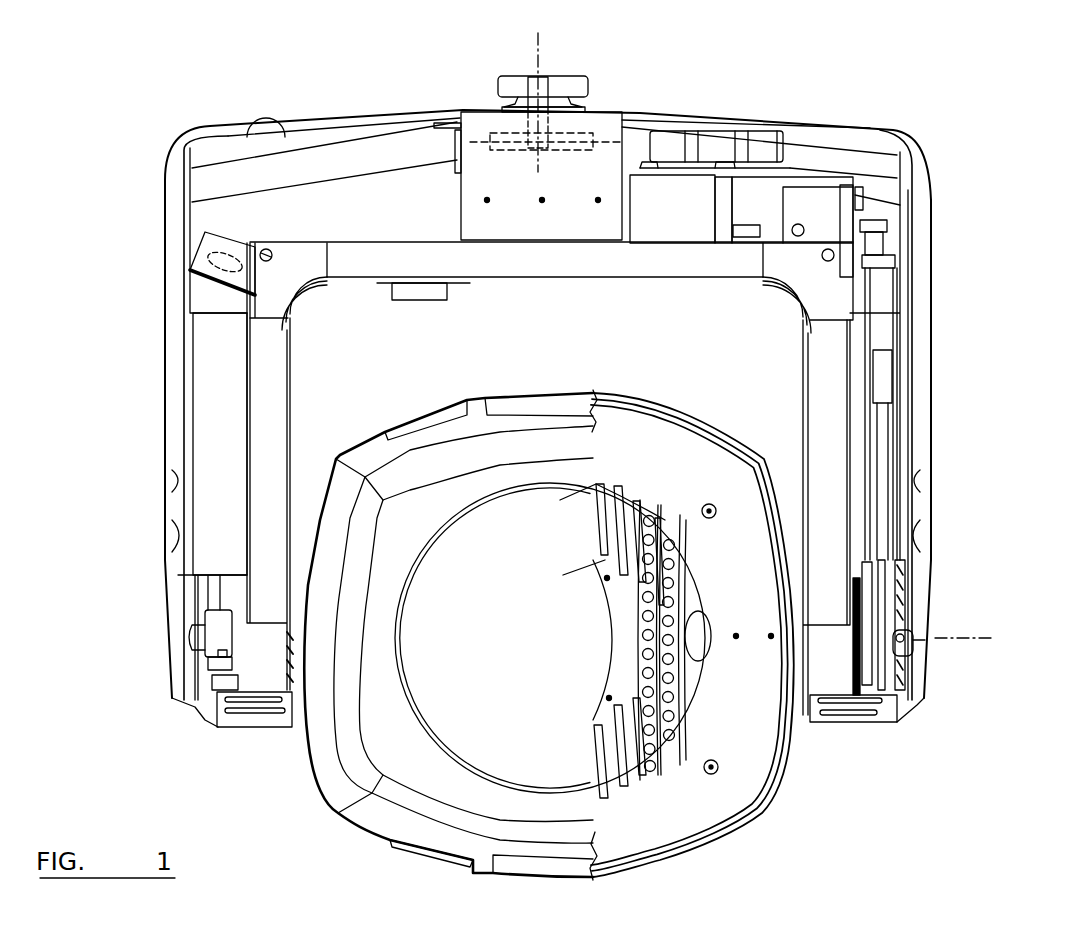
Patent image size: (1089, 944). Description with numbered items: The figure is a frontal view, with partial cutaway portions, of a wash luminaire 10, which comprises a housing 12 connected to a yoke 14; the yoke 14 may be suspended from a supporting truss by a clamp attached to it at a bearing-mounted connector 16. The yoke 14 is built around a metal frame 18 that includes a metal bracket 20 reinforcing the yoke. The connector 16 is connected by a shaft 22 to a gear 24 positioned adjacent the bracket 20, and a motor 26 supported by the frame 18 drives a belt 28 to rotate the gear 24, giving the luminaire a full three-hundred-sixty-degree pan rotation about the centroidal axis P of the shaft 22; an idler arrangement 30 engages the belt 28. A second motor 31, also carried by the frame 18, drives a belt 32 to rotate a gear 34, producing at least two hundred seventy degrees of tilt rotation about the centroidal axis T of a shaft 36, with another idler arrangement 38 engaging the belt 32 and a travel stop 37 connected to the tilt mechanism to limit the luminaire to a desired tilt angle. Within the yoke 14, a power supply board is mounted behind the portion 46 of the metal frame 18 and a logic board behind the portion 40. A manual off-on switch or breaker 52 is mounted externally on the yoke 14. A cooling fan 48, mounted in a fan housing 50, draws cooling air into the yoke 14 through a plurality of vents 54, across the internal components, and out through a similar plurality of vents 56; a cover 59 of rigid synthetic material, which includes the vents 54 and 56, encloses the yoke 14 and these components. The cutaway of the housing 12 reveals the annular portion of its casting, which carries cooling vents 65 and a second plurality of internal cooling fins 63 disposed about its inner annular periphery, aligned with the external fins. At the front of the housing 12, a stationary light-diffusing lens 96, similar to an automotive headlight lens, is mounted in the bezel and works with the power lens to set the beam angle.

The wash luminaire 10 is at (947, 237).
The housing 12 is at (606, 398).
The yoke 14 is at (933, 400).
The connector 16 is at (590, 81).
The metal frame 18 is at (735, 283).
The metal bracket 20 is at (558, 234).
The shaft 22 is at (553, 78).
The gear 24 is at (490, 132).
The motor 26 is at (720, 228).
The belt 28 is at (645, 142).
The idler arrangement 30 is at (788, 131).
The motor 31 is at (781, 208).
The belt 32 is at (885, 463).
The gear 34 is at (893, 590).
The shaft 36 is at (928, 664).
The travel stop 37 is at (195, 592).
The idler arrangement 38 is at (913, 327).
The portion of metal frame 40 is at (822, 394).
The portion of metal frame 46 is at (280, 396).
The cooling fan 48 is at (188, 283).
The fan housing 50 is at (230, 242).
The off-on switch or breaker 52 is at (425, 294).
The vents 54 is at (843, 702).
The vents 56 is at (247, 700).
The cover 59 is at (165, 210).
The internal cooling fins 63 is at (627, 773).
The cooling vents 65 is at (682, 709).
The stationary lens 96 is at (512, 624).
The centroidal axis P is at (535, 50).
The centroidal axis T is at (950, 640).